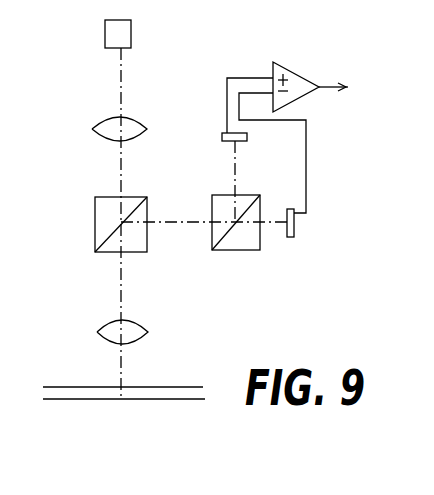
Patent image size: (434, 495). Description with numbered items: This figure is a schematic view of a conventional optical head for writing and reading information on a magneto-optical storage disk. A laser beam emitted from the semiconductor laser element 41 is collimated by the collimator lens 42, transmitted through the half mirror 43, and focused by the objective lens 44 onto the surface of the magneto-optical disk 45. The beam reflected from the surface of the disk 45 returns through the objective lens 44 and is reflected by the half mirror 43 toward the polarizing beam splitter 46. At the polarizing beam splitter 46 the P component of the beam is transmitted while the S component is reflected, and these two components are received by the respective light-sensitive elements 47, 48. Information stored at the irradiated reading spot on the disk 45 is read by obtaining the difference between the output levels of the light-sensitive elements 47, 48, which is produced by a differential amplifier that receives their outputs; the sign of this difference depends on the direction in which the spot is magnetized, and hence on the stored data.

The semiconductor laser element 41 is at (131, 38).
The collimator lens 42 is at (103, 129).
The half mirror 43 is at (107, 210).
The objective lens 44 is at (105, 331).
The magneto-optical disk 45 is at (184, 387).
The polarizing beam splitter 46 is at (243, 242).
The light-sensitive element 47 is at (300, 229).
The light-sensitive element 48 is at (222, 136).